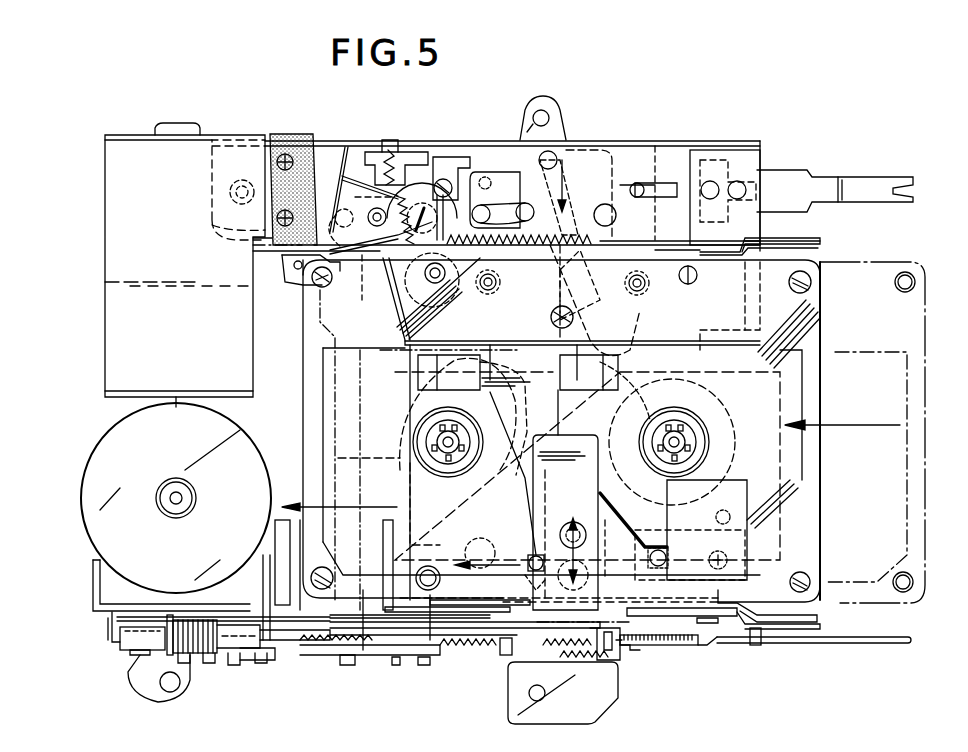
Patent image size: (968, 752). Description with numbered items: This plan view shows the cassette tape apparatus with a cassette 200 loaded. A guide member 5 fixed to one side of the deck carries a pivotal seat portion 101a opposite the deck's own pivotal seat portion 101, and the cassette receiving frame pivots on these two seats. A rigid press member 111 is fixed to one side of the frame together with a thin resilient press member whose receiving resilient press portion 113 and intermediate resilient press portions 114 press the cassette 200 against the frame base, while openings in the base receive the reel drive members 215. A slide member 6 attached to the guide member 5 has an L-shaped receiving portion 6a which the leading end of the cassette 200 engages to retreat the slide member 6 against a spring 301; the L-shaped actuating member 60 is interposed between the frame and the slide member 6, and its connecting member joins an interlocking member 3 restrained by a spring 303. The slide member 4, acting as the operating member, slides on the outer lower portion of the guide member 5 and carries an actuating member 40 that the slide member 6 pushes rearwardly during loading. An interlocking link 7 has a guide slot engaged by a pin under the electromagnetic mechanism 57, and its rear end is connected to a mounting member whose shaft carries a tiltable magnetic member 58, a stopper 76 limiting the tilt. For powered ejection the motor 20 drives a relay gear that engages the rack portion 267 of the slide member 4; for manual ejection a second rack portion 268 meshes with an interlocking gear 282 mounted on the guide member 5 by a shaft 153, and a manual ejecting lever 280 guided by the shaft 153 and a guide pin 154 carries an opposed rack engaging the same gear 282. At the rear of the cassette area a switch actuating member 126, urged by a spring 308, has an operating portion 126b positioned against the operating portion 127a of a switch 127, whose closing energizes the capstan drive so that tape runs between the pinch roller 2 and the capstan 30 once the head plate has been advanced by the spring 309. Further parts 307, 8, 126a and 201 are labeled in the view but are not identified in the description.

The switch 127 is at (297, 140).
The operating portion 127a is at (338, 160).
The operating portion 126b is at (372, 176).
The spring 308 is at (434, 170).
The link 307 is at (497, 200).
The spring 309 is at (535, 165).
The actuating arm 8 is at (822, 182).
The pivotal seat portion 101 is at (806, 236).
The pivot screw 126a is at (312, 281).
The switch actuating member 126 is at (371, 262).
The pinch roller 2 is at (446, 283).
The intermediate resilient press portion 114 is at (480, 350).
The capstan 30 is at (400, 346).
The reel shaft 201 is at (426, 436).
The reel drive member 215 is at (437, 448).
The cassette 200 is at (815, 474).
The rigid press member 111 is at (545, 492).
The receiving resilient press portion 113 is at (750, 525).
The motor 20 is at (93, 460).
The L-shaped receiving portion 6a is at (295, 545).
The interlocking link 7 is at (263, 612).
The slide member 6 is at (362, 612).
The electromagnetic mechanism 57 is at (207, 632).
The stopper 76 is at (112, 638).
The magnetic member 58 is at (135, 640).
The rack portion 267 is at (234, 662).
The slide member 4 is at (285, 645).
The actuating member 40 is at (330, 648).
The interlocking member 3 is at (378, 656).
The L-shaped actuating member 60 is at (437, 656).
The spring 303 is at (458, 660).
The spring 301 is at (488, 658).
The guide member 5 is at (522, 628).
The shaft 153 is at (618, 662).
The interlocking gear 282 is at (630, 648).
The rack portion 268 is at (688, 644).
The guide pin 154 is at (756, 646).
The pivotal seat portion 101a is at (804, 630).
The manual ejecting lever 280 is at (882, 644).